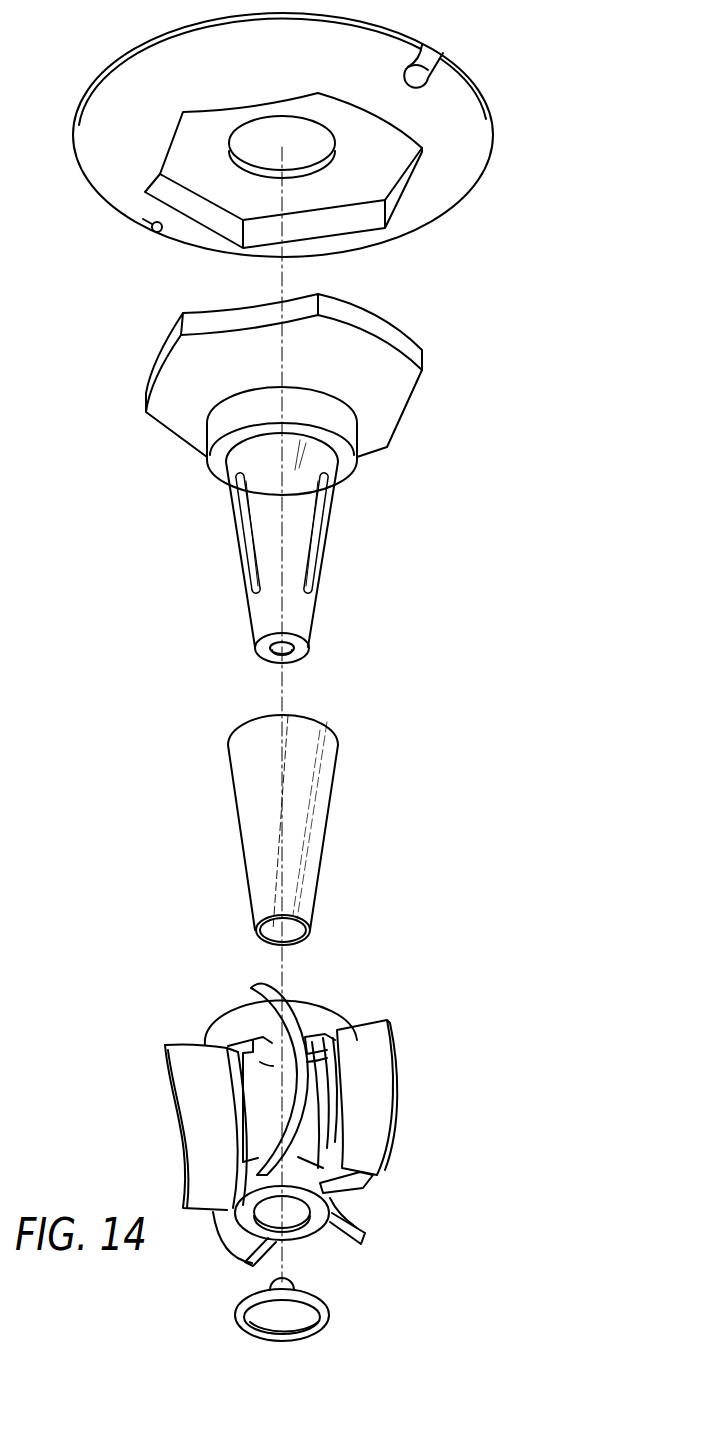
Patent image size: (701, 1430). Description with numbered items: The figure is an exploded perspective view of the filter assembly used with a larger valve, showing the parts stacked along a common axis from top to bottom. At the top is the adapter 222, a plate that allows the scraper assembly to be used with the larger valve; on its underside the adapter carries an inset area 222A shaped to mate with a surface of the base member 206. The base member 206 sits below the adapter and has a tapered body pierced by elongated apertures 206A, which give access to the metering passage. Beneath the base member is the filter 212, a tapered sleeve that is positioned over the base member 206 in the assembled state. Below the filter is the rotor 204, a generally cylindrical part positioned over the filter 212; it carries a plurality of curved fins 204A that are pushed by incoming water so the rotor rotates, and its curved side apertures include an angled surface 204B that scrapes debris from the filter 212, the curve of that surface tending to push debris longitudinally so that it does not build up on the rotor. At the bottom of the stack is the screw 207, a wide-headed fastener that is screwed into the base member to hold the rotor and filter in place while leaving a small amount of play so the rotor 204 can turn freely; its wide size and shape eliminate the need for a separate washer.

The adapter 222 is at (326, 152).
The inset area 222A is at (203, 213).
The base member 206 is at (314, 478).
The elongated apertures 206A is at (318, 592).
The filter 212 is at (250, 838).
The rotor 204 is at (261, 1105).
The curved fins 204A is at (207, 1113).
The angled surface 204B is at (270, 1083).
The screw 207 is at (300, 1327).